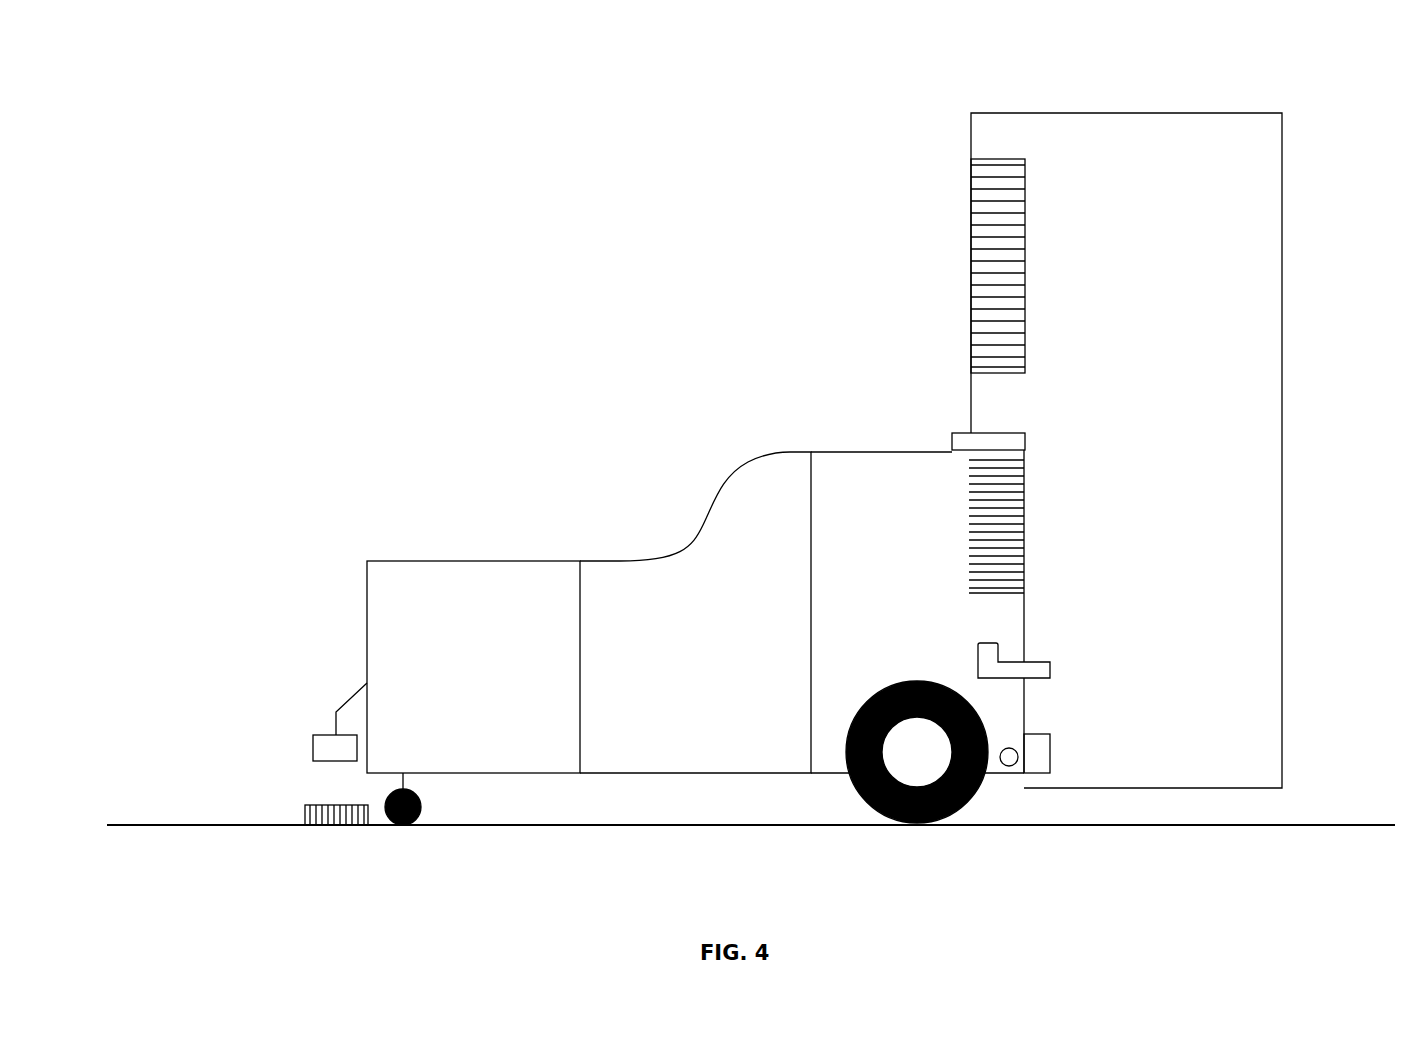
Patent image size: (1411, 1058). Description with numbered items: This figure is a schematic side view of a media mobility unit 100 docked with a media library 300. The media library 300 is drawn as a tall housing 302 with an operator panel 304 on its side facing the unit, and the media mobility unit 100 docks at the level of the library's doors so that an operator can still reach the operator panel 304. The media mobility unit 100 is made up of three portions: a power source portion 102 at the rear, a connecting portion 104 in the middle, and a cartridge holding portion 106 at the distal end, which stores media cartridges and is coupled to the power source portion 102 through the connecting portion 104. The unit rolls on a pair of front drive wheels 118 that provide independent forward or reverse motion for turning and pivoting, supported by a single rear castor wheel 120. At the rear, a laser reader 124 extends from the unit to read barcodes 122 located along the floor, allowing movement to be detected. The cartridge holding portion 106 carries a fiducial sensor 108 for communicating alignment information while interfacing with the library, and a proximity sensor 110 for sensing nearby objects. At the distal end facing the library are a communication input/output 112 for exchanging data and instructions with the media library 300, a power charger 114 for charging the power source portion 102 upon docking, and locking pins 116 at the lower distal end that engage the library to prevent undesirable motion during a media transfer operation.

The media mobility unit 100 is at (545, 468).
The power source portion 102 is at (496, 677).
The connecting portion 104 is at (707, 677).
The cartridge holding portion 106 is at (938, 622).
The fiducial sensor 108 is at (962, 443).
The proximity sensor 110 is at (1015, 442).
The communication input/output 112 is at (1040, 668).
The power charger 114 is at (1040, 745).
The locking pins 116 is at (1009, 748).
The drive wheels 118 is at (922, 827).
The castor wheel 120 is at (403, 827).
The barcodes 122 is at (305, 816).
The laser reader 124 is at (320, 749).
The media library 300 is at (1293, 103).
The housing 302 is at (1148, 270).
The operator panel 304 is at (980, 265).